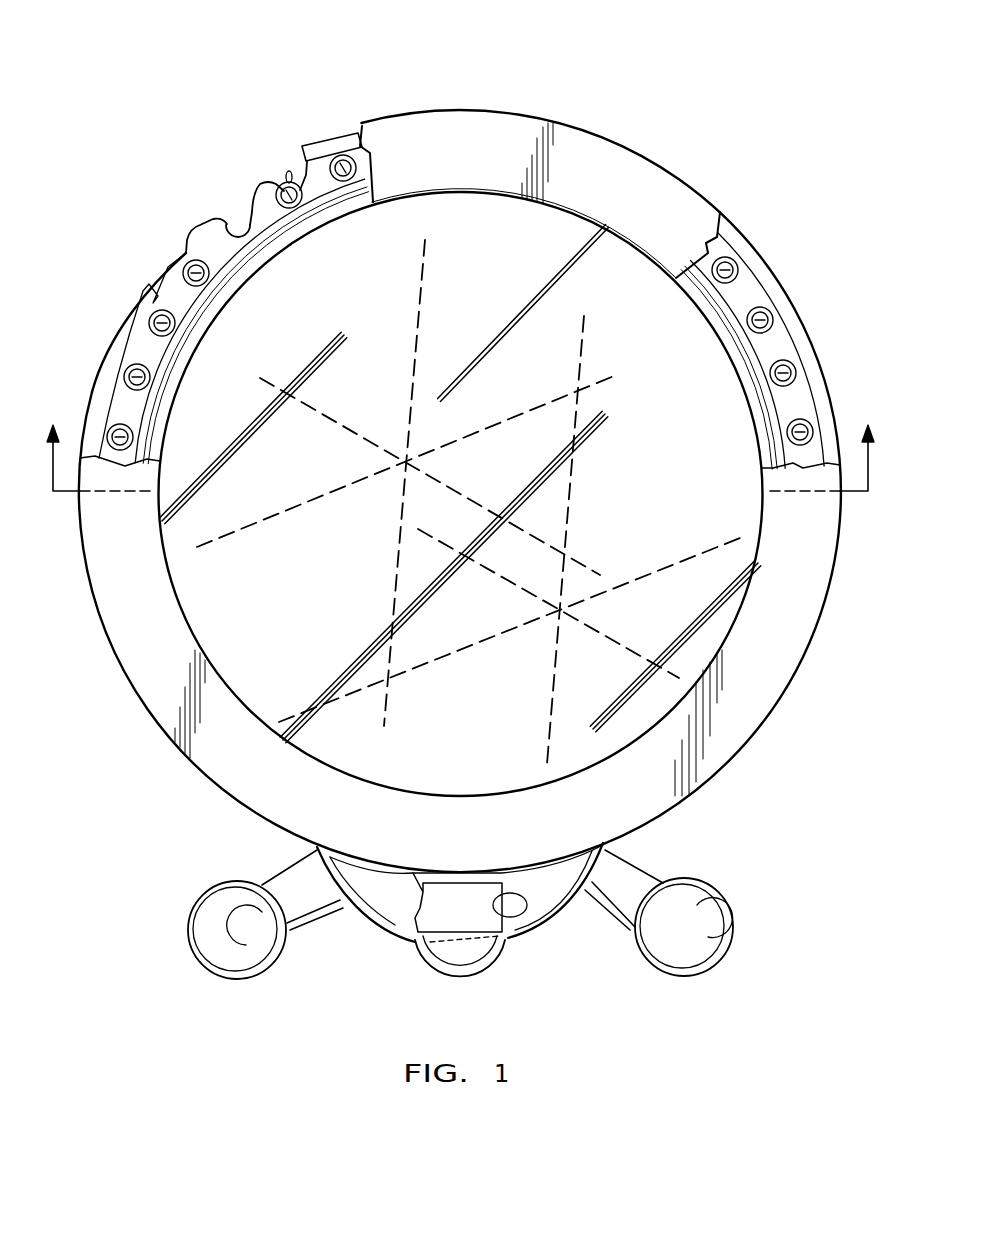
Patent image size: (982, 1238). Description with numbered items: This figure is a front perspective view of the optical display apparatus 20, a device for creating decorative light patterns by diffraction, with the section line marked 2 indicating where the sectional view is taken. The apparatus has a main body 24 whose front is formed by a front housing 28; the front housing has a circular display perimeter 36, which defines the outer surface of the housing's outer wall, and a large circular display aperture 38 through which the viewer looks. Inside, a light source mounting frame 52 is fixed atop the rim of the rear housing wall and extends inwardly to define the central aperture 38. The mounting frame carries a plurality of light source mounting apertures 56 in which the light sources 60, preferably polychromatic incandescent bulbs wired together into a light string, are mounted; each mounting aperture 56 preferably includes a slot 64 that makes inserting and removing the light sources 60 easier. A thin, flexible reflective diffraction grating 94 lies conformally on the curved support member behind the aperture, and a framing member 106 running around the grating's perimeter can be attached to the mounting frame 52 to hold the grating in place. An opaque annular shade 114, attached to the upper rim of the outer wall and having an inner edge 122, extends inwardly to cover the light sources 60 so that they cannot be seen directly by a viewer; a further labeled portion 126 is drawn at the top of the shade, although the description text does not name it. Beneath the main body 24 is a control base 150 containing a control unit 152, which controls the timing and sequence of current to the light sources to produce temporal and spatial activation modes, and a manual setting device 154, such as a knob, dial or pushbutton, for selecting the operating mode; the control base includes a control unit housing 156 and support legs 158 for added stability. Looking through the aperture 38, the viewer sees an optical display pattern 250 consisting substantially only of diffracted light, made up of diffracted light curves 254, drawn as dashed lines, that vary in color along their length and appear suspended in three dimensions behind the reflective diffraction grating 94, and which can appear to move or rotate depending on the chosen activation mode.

The optical display apparatus 20 is at (369, 83).
The main body 24 is at (733, 194).
The front housing 28 is at (670, 173).
The display perimeter 36 is at (218, 309).
The display aperture 38 is at (150, 440).
The light source mounting frame 52 is at (221, 185).
The light source mounting apertures 56 is at (242, 230).
The light sources 60 is at (288, 172).
The slot 64 is at (240, 225).
The reflective diffraction grating 94 is at (694, 360).
The framing member 106 is at (173, 373).
The annular shade 114 is at (793, 643).
The inner edge 122 is at (571, 210).
The top segment 126 is at (600, 137).
The control base 150 is at (483, 921).
The control unit 152 is at (460, 922).
The manual setting device 154 is at (508, 914).
The control unit housing 156 is at (392, 922).
The support legs 158 is at (207, 895).
The optical display pattern 250 is at (376, 343).
The diffracted light curves 254 is at (421, 298).
The section line 2- 2 is at (460, 441).